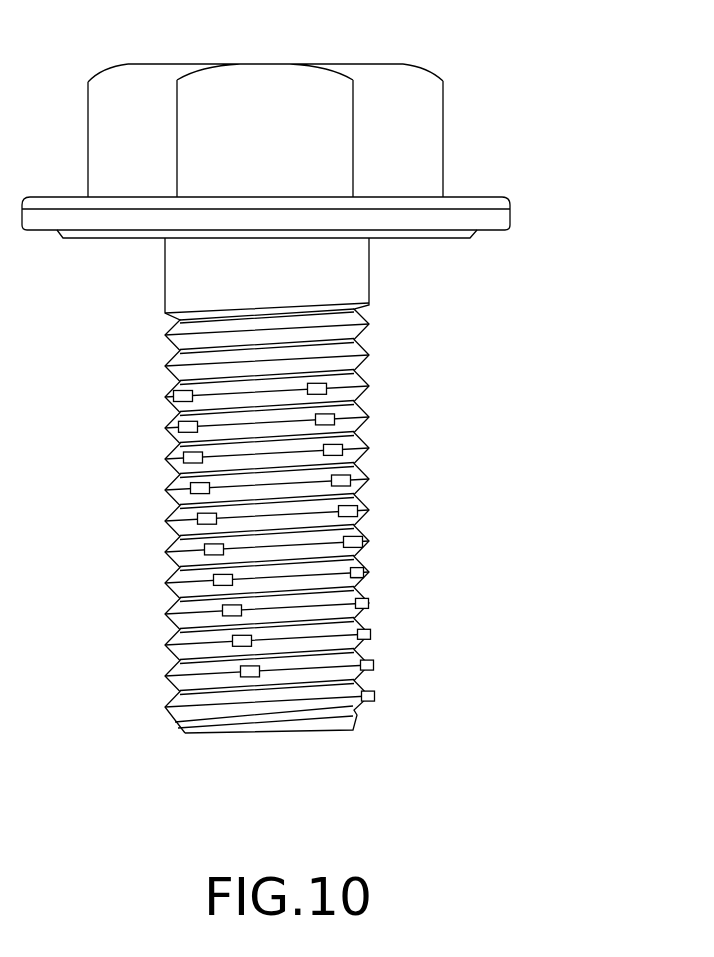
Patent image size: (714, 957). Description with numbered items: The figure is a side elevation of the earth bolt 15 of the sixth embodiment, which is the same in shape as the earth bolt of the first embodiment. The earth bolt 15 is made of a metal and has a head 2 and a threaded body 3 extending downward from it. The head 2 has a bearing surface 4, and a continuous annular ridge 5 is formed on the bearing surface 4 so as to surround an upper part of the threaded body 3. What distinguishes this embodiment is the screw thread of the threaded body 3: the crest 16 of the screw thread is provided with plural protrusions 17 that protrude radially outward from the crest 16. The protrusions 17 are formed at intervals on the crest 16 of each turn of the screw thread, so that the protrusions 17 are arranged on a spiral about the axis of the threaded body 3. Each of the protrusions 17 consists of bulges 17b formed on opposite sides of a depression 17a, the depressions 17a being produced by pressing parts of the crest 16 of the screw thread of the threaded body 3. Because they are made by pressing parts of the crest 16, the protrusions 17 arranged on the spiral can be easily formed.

The earth bolt 15 is at (525, 86).
The head 2 is at (265, 88).
The threaded body 3 is at (287, 733).
The bearing surface 4 is at (487, 233).
The annular ridge 5 is at (413, 240).
The crest 16 is at (167, 587).
The protrusions 17 is at (177, 466).
The depressions 17a is at (358, 563).
The bulges 17b is at (365, 581).